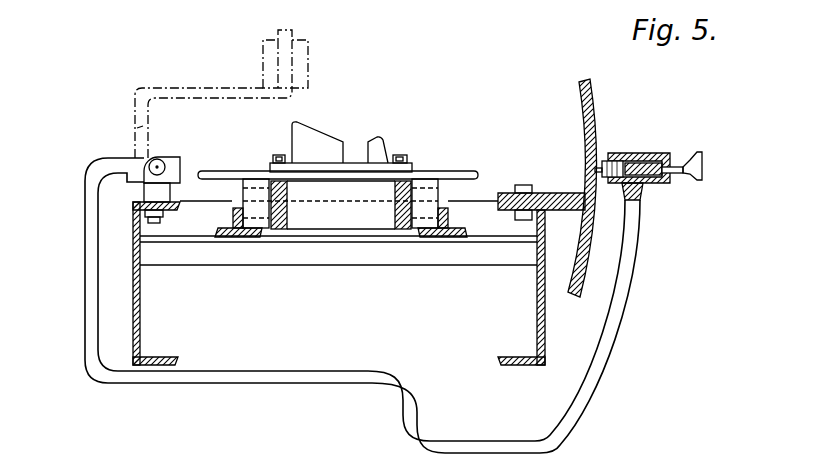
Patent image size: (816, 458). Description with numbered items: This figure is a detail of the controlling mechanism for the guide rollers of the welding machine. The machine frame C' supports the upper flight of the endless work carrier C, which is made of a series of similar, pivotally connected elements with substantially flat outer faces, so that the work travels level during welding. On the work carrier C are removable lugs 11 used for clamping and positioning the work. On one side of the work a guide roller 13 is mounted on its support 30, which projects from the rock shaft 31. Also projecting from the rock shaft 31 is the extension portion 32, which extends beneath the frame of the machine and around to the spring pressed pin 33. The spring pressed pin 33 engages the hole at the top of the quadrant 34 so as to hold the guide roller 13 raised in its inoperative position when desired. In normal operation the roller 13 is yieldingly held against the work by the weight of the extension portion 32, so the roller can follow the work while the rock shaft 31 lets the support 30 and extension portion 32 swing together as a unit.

The support 30 is at (163, 82).
The guide roller 13 is at (310, 58).
The rock shaft 31 is at (163, 161).
The extension portion 32 is at (85, 263).
The removable lug 11 is at (325, 145).
The endless work carrier C is at (338, 192).
The frame C' is at (311, 275).
The spring pressed pin 33 is at (597, 153).
The quadrant 34 is at (580, 87).